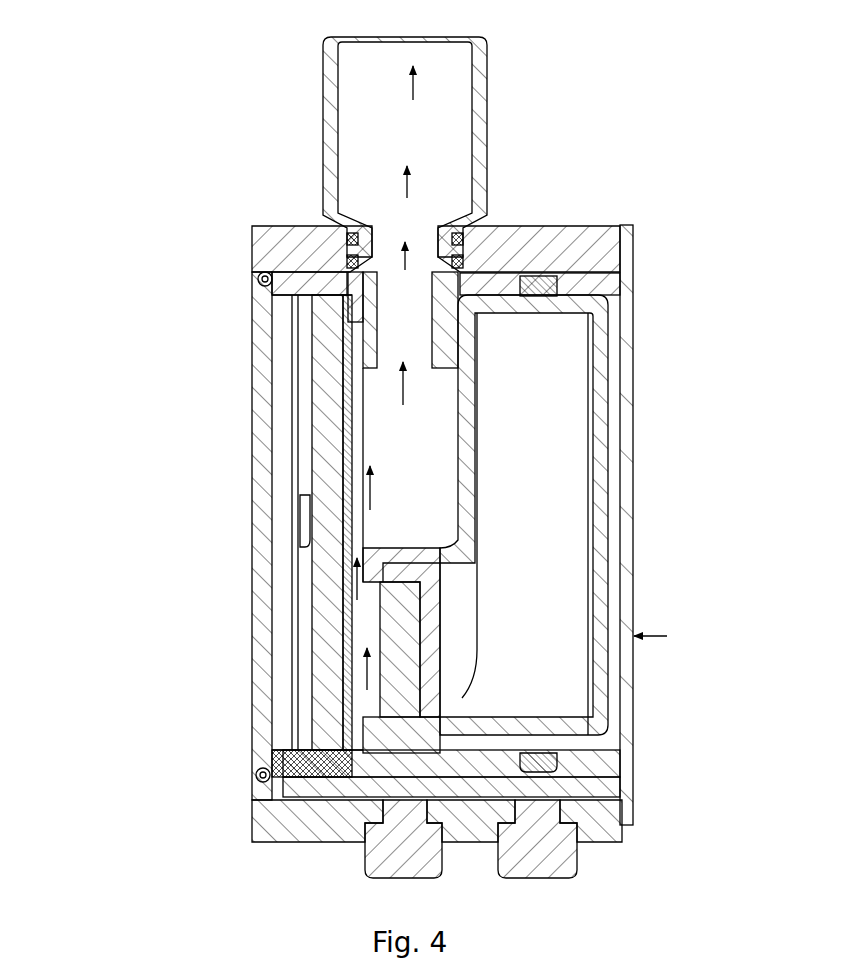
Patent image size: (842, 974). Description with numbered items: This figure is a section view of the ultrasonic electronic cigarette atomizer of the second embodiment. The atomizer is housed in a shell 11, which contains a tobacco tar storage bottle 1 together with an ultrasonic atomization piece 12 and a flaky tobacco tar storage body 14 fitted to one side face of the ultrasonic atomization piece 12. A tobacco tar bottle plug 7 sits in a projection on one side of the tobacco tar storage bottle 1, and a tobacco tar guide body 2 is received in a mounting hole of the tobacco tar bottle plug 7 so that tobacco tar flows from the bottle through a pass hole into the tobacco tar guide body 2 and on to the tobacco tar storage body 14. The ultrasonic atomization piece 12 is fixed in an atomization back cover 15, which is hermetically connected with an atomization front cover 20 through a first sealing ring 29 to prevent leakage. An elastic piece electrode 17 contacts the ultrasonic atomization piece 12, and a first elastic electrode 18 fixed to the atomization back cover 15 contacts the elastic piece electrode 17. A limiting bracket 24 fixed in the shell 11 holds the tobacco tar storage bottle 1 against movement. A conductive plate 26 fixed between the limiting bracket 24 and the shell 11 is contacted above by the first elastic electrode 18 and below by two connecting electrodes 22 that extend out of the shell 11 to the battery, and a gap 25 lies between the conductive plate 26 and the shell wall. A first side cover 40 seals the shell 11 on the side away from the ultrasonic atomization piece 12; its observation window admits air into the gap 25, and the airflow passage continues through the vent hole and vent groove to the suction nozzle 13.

The tobacco tar storage bottle 1 is at (604, 472).
The tobacco tar guide body 2 is at (421, 697).
The tobacco tar bottle plug 7 is at (441, 628).
The shell 11 is at (255, 245).
The ultrasonic atomization piece 12 is at (314, 597).
The suction nozzle 13 is at (325, 110).
The flaky tobacco tar storage body 14 is at (346, 672).
The atomization back cover 15 is at (266, 292).
The elastic piece electrode 17 is at (294, 472).
The first elastic electrode 18 is at (262, 770).
The atomization front cover 20 is at (250, 402).
The connecting electrode 22 is at (576, 863).
The limiting bracket 24 is at (586, 757).
The gap 25 is at (290, 798).
The conductive plate 26 is at (586, 788).
The first sealing ring 29 is at (552, 277).
The first side cover 40 is at (634, 283).